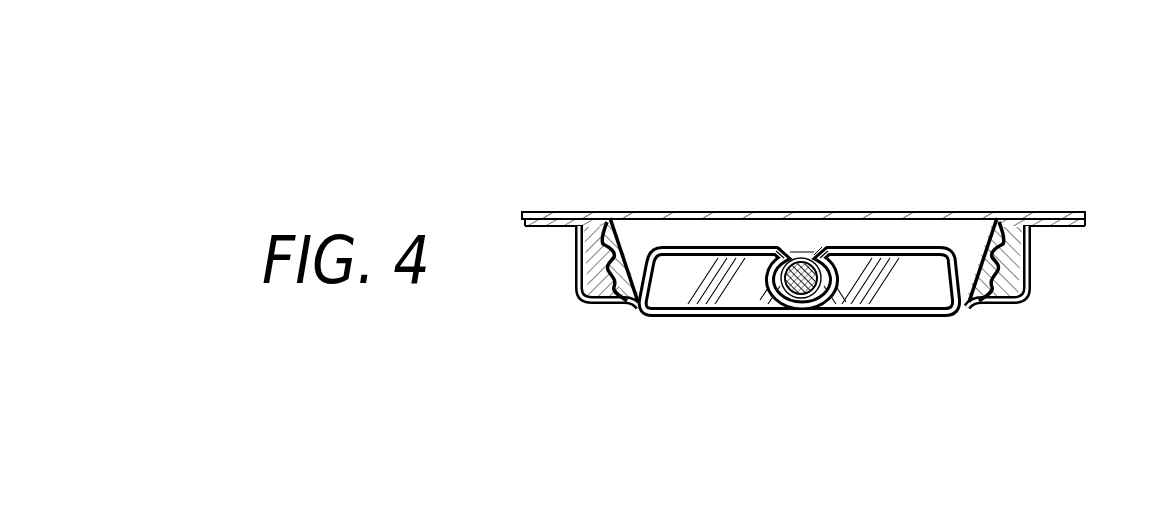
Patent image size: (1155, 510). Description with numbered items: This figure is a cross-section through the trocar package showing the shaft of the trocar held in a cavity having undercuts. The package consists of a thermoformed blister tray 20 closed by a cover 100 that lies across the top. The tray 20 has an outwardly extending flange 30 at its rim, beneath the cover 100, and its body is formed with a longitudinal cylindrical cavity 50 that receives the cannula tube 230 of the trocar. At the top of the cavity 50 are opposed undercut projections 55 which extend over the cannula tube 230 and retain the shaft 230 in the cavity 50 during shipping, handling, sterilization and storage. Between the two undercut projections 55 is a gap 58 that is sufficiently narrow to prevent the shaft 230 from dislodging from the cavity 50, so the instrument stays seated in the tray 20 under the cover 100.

The cover 100 is at (654, 211).
The outwardly extending flange 30 is at (527, 223).
The thermoformed blister tray 20 is at (1036, 263).
The longitudinal cylindrical cavity 50 is at (773, 302).
The cannula tube 230 is at (830, 305).
The undercut projections 55 is at (800, 248).
The gap 58 is at (804, 248).